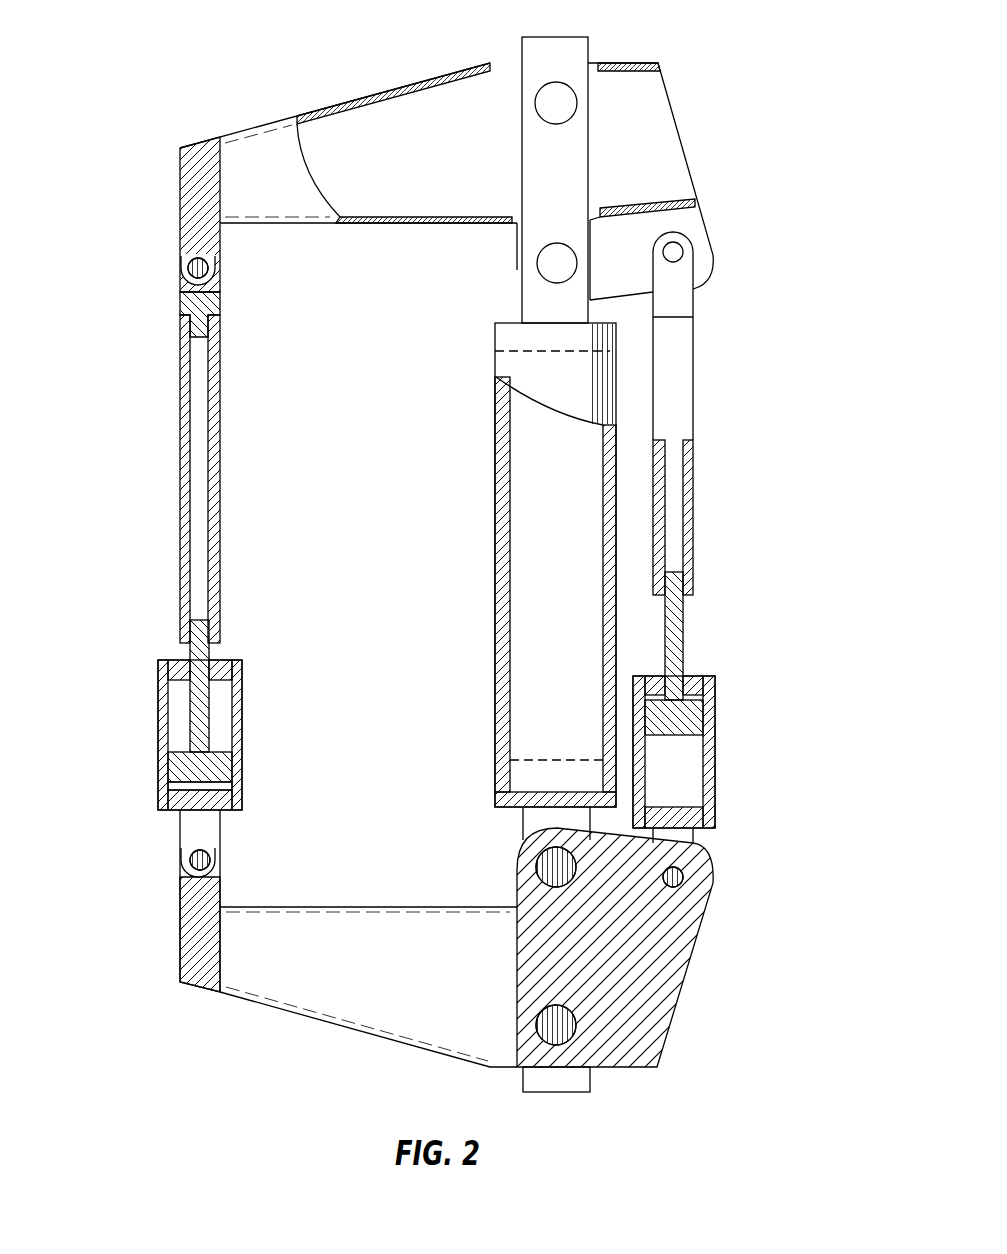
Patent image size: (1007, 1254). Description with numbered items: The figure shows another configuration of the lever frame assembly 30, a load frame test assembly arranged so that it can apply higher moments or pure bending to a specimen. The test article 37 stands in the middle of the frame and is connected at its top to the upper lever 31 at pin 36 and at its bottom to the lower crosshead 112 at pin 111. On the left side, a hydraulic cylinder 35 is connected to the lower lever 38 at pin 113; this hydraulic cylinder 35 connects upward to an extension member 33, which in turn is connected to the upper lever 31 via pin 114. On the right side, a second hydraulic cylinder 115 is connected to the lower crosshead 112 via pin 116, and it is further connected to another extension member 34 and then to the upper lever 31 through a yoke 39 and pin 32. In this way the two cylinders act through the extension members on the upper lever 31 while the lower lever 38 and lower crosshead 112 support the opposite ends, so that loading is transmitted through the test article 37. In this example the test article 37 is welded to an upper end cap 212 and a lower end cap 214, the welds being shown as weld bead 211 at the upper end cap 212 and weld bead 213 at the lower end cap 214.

The lever frame assembly 30 is at (188, 42).
The upper lever 31 is at (289, 195).
The pin 32 is at (673, 252).
The extension member 33 is at (183, 418).
The extension member 34 is at (690, 488).
The hydraulic cylinder 35 is at (162, 723).
The pin 36 is at (557, 263).
The test article 37 is at (608, 532).
The lower lever 38 is at (383, 987).
The yoke 39 is at (680, 298).
The pin 111 is at (556, 867).
The lower crosshead 112 is at (645, 990).
The pin 113 is at (200, 860).
The pin 114 is at (200, 268).
The second hydraulic cylinder 115 is at (710, 750).
The pin 116 is at (673, 877).
The weld bead 211 is at (568, 351).
The upper end cap 212 is at (598, 333).
The weld bead 213 is at (568, 760).
The lower end cap 214 is at (580, 800).